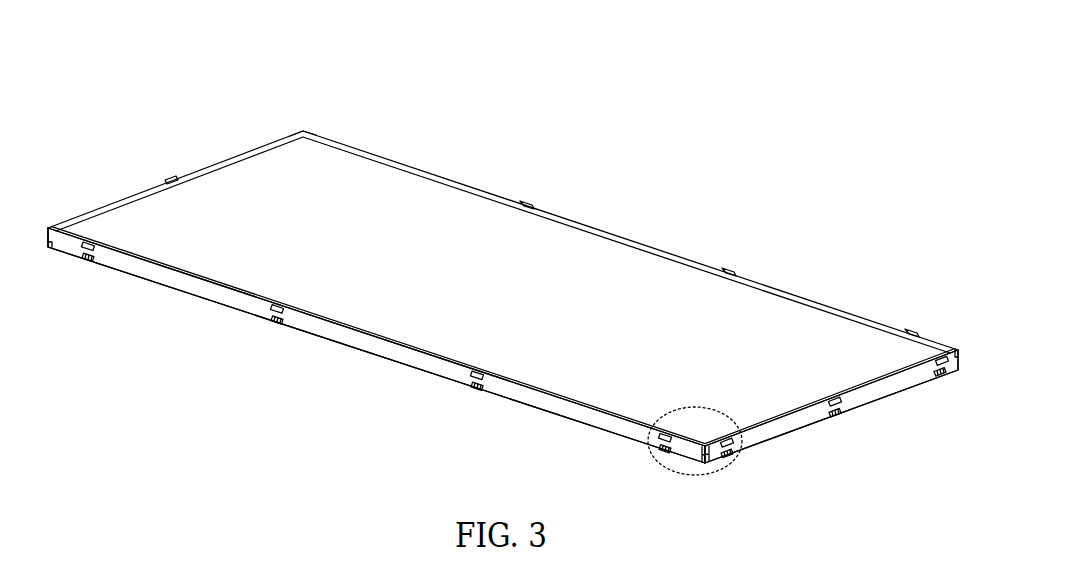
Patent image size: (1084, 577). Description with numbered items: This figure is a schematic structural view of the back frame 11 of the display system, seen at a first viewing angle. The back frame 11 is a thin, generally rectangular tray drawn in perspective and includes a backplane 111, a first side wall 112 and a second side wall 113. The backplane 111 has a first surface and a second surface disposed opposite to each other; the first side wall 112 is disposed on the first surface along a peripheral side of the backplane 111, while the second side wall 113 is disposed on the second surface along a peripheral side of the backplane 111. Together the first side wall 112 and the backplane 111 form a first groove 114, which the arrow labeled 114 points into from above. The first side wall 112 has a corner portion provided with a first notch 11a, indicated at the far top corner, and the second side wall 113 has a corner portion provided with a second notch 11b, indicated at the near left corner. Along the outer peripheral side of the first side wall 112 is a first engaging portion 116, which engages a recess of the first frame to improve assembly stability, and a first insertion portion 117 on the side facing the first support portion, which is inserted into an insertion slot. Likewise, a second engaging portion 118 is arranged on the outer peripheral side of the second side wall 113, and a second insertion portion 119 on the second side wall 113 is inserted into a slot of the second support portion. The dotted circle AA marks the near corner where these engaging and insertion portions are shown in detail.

The back frame 11 is at (783, 136).
The first notch 11a is at (303, 131).
The second notch 11b is at (48, 248).
The backplane 111 is at (423, 217).
The first side wall 112 is at (845, 308).
The second side wall 113 is at (535, 405).
The first groove 114 is at (547, 254).
The first engaging portion 116 is at (265, 305).
The first insertion portion 117 is at (730, 270).
The second engaging portion 118 is at (473, 387).
The second insertion portion 119 is at (277, 322).
The detail region AA is at (660, 456).